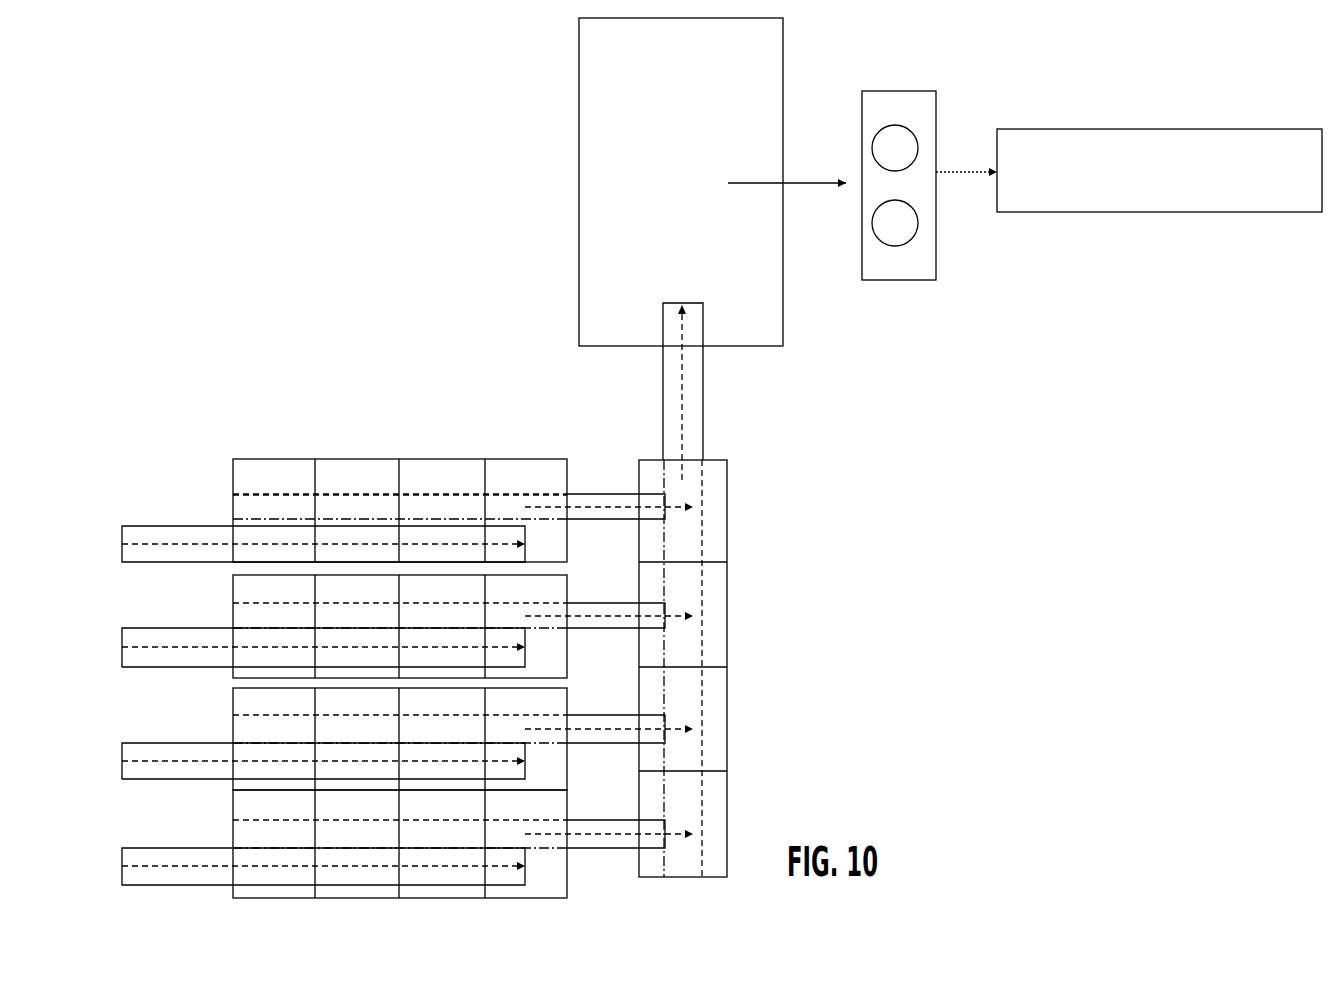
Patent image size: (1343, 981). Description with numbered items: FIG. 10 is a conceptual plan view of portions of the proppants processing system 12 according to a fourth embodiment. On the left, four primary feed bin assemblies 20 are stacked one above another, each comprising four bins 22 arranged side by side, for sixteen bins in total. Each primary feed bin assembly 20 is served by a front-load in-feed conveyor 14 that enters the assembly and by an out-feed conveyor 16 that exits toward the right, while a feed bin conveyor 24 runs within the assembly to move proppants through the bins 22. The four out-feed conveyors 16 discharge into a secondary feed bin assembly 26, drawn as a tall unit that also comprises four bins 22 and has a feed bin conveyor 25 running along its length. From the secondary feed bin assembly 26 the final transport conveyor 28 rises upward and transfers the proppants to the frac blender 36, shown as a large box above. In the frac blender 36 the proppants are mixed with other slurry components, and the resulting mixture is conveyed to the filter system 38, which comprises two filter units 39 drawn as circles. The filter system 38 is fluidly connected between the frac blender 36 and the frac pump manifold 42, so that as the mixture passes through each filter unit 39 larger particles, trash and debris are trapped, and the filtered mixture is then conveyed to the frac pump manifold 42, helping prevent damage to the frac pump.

The proppants processing system 12 is at (830, 528).
The in-feed conveyor 14 is at (193, 530).
The out-feed conveyor 16 is at (603, 492).
The primary feed bin assembly 20 is at (334, 458).
The bin 22 is at (385, 459).
The feed bin conveyor 24 is at (285, 500).
The feed bin conveyor 25 is at (683, 538).
The secondary feed bin assembly 26 is at (727, 630).
The final transport conveyor 28 is at (703, 418).
The frac blender 36 is at (602, 103).
The filter system 38 is at (968, 213).
The filter unit 39 is at (898, 235).
The frac pump manifold 42 is at (1048, 129).